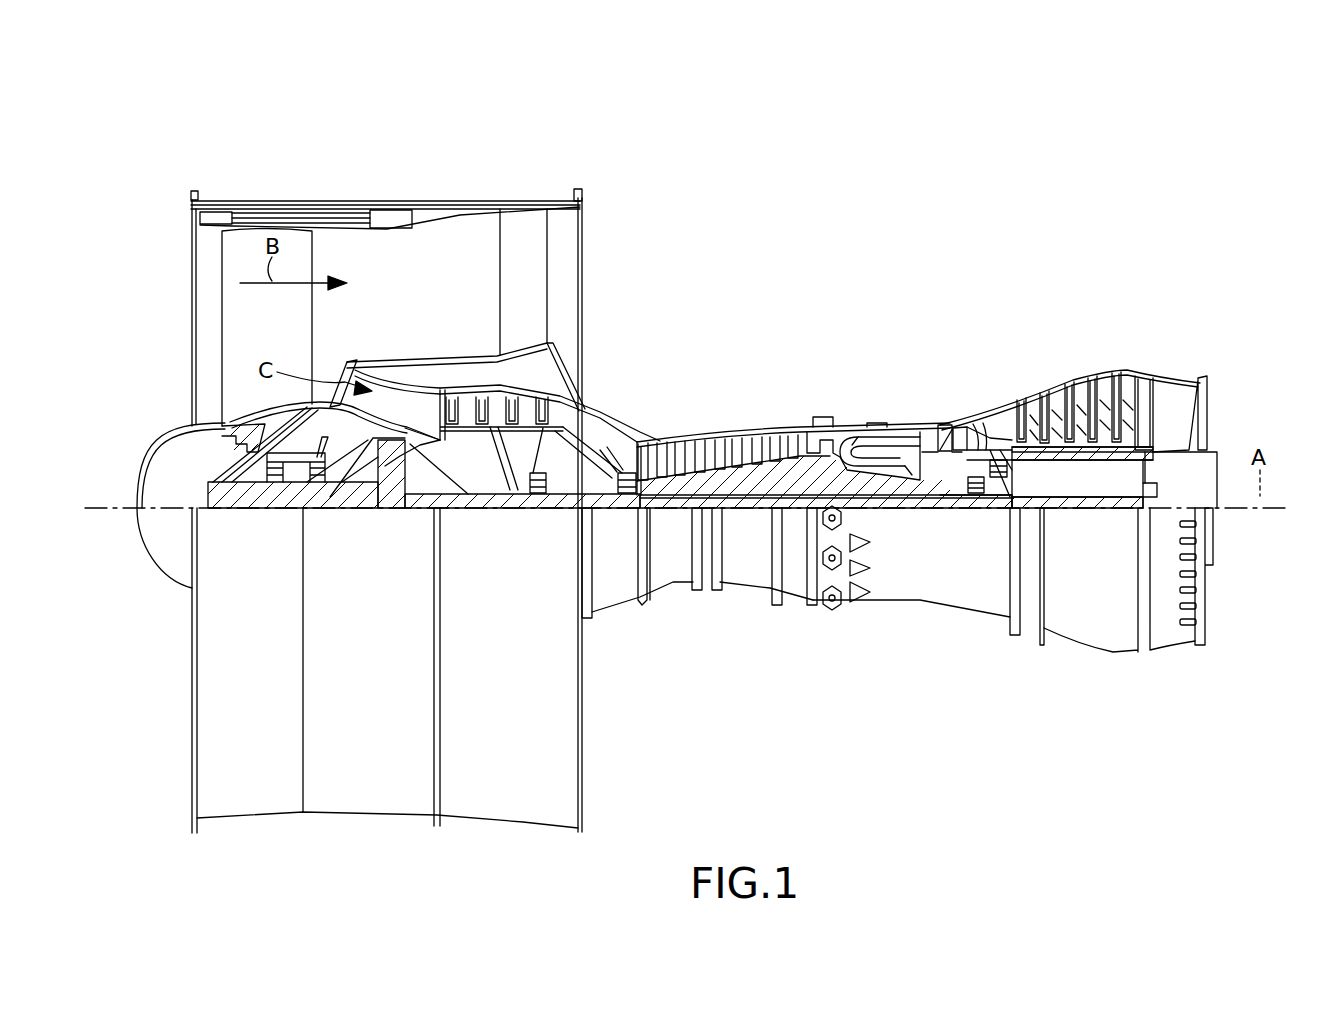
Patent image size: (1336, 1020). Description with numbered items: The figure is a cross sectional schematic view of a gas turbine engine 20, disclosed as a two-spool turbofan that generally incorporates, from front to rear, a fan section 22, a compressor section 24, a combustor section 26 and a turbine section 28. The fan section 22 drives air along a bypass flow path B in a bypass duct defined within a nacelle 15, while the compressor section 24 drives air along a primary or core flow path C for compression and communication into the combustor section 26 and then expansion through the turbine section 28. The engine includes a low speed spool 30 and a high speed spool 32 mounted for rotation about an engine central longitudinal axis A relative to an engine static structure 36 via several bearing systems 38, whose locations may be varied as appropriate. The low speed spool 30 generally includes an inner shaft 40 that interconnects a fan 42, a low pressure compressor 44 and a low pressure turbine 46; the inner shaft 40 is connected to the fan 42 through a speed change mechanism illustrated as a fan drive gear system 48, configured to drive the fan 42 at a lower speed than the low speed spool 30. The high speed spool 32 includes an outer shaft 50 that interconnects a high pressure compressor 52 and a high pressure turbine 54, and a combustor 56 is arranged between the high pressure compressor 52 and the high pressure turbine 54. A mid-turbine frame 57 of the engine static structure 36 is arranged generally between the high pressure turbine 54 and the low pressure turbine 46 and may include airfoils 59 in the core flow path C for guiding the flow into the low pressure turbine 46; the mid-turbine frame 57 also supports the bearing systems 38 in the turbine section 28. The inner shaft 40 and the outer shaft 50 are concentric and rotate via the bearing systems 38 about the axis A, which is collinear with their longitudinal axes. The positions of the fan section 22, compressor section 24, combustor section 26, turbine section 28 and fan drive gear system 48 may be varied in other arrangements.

The nacelle 15 is at (382, 210).
The gas turbine engine 20 is at (900, 218).
The fan section 22 is at (305, 185).
The compressor section 24 is at (626, 402).
The combustor section 26 is at (866, 386).
The turbine section 28 is at (1032, 360).
The low speed spool 30 is at (750, 510).
The high speed spool 32 is at (800, 428).
The engine static structure 36 is at (796, 580).
The bearing systems 38 is at (533, 506).
The inner shaft 40 is at (604, 510).
The fan 42 is at (280, 321).
The low pressure compressor 44 is at (512, 402).
The low pressure turbine 46 is at (1080, 395).
The fan drive gear system 48 is at (398, 500).
The outer shaft 50 is at (872, 506).
The high pressure compressor 52 is at (744, 440).
The high pressure turbine 54 is at (943, 425).
The combustor 56 is at (885, 448).
The mid-turbine frame 57 is at (994, 412).
The airfoils 59 is at (990, 438).